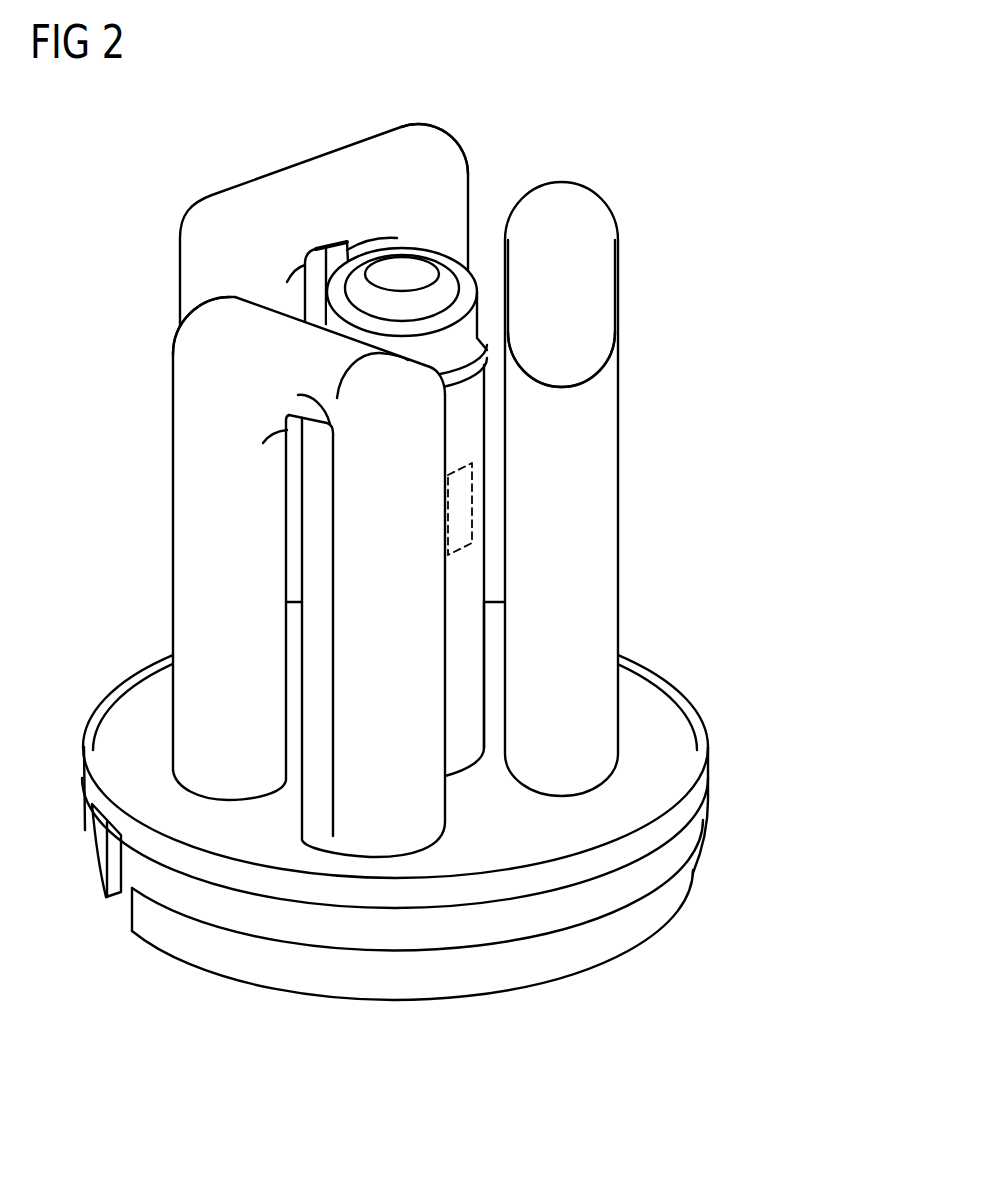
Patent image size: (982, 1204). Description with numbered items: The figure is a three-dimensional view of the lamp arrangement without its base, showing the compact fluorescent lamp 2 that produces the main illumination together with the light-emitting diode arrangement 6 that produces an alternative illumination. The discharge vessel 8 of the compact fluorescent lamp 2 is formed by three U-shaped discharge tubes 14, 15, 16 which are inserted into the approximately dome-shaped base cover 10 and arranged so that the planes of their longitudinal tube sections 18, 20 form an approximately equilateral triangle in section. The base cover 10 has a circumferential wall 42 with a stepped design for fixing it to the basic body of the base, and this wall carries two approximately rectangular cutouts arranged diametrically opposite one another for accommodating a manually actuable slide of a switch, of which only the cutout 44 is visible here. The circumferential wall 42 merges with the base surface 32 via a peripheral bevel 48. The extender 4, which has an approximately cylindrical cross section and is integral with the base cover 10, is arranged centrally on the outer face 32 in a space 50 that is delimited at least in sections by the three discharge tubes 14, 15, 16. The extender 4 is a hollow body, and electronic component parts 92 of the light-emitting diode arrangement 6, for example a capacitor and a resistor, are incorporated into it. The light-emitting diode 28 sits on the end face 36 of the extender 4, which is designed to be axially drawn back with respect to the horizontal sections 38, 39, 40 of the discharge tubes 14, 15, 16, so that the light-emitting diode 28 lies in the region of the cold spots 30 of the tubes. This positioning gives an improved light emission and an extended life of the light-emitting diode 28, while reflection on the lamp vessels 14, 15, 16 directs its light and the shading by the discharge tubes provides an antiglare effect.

The compact fluorescent lamp 2 is at (419, 531).
The extender 4 is at (424, 483).
The light-emitting diode arrangement 6 is at (441, 309).
The discharge vessel 8 is at (255, 558).
The base cover 10 is at (419, 807).
The discharge tube 14 is at (310, 220).
The discharge tube 15 is at (606, 489).
The discharge tube 16 is at (177, 577).
The longitudinal tube section 18 is at (185, 572).
The longitudinal tube section 20 is at (345, 683).
The light-emitting diode 28 is at (403, 265).
The cold spot 30 is at (475, 147).
The outer face 32 is at (650, 685).
The end face 36 is at (487, 365).
The horizontal section 38 is at (268, 333).
The horizontal section 39 is at (317, 170).
The horizontal section 40 is at (605, 279).
The circumferential wall 42 is at (200, 903).
The cutout 44 is at (103, 856).
The peripheral bevel 48 is at (95, 758).
The space 50 is at (470, 660).
The electronic component parts 92 is at (465, 510).